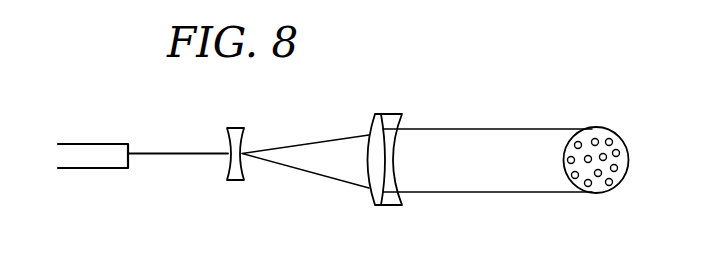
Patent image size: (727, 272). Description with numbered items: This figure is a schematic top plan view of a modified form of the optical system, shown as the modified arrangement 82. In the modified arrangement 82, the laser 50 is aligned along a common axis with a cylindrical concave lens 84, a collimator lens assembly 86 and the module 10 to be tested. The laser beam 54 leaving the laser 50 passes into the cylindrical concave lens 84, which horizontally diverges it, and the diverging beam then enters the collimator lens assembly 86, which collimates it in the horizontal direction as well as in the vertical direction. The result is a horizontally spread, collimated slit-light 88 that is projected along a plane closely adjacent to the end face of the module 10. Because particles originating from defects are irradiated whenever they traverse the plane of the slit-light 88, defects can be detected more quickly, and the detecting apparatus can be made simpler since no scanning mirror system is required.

The module 10 is at (599, 202).
The laser 50 is at (82, 160).
The laser beam 54 is at (172, 157).
The modified arrangement 82 is at (315, 148).
The cylindrical concave lens 84 is at (235, 126).
The collimator lens assembly 86 is at (387, 105).
The slit-light 88 is at (437, 118).